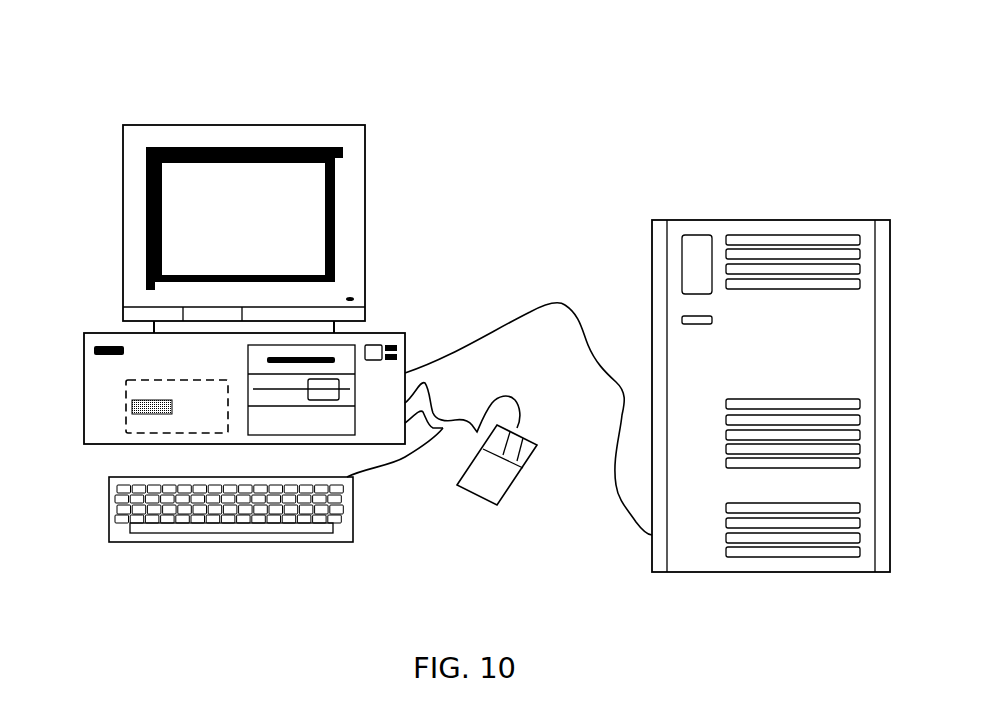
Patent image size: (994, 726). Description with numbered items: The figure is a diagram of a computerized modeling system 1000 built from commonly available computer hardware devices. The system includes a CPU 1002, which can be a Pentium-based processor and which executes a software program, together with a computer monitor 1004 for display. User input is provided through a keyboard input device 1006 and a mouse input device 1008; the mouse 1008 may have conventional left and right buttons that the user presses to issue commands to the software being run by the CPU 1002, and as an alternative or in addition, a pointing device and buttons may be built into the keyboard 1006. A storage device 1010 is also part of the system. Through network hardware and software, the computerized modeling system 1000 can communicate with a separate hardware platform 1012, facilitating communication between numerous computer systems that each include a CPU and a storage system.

The computerized modeling system 1000 is at (459, 293).
The CPU 1002 is at (133, 410).
The computer monitor 1004 is at (318, 213).
The keyboard input device 1006 is at (109, 523).
The mouse input device 1008 is at (488, 482).
The storage device 1010 is at (332, 418).
The hardware platform 1012 is at (710, 218).